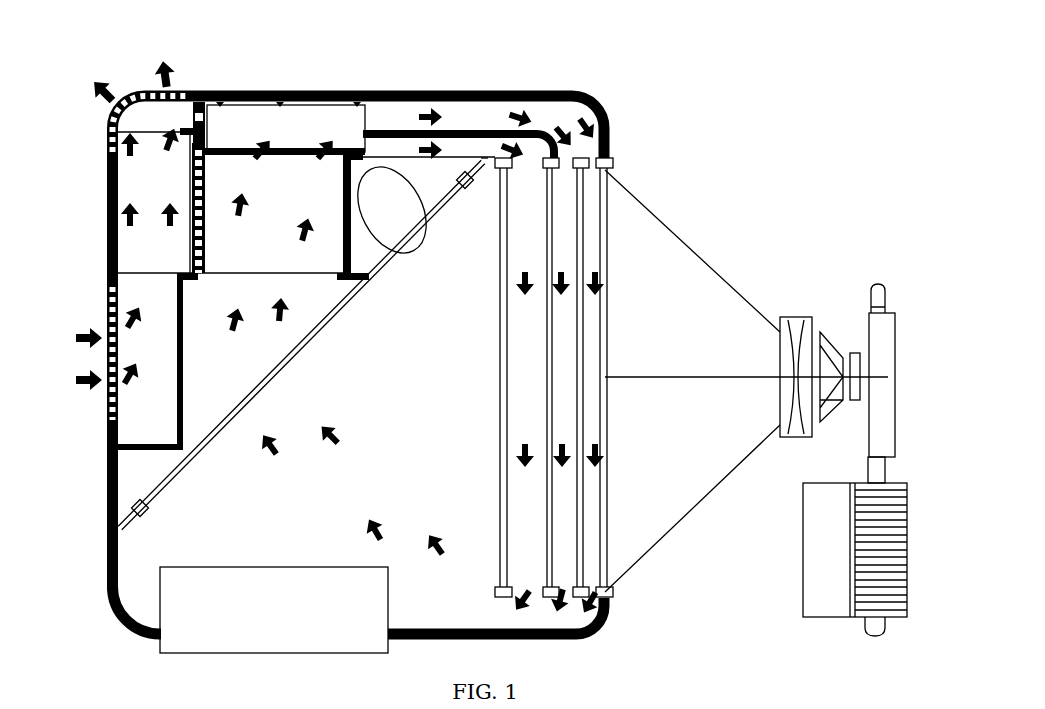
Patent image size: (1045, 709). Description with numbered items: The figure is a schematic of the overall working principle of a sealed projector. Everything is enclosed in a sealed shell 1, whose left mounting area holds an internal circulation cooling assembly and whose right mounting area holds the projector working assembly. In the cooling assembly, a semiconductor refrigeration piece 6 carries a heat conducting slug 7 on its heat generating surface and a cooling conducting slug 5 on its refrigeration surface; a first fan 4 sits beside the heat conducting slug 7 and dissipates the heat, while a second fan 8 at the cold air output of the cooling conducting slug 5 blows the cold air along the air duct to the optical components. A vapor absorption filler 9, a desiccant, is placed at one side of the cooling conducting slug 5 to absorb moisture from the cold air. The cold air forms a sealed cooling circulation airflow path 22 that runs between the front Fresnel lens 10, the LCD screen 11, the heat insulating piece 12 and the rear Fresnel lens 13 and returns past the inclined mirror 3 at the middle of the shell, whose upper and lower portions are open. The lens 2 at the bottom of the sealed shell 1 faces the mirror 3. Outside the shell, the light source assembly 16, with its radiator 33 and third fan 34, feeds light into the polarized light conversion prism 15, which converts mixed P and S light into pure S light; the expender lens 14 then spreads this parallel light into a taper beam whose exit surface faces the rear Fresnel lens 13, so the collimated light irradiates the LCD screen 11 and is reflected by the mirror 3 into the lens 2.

The sealed shell 1 is at (110, 610).
The lens 2 is at (185, 577).
The mirror 3 is at (138, 500).
The first fan 4 is at (148, 420).
The cooling conducting slug 5 is at (250, 252).
The semiconductor refrigeration piece 6 is at (193, 222).
The heat conducting slug 7 is at (138, 195).
The second fan 8 is at (227, 126).
The vapor absorption filler 9 is at (387, 210).
The front Fresnel lens 10 is at (503, 158).
The LCD screen 11 is at (548, 158).
The heat insulating piece 12 is at (580, 158).
The rear Fresnel lens 13 is at (605, 158).
The expender lens 14 is at (797, 337).
The polarized light conversion prism 15 is at (832, 357).
The light source assembly 16 is at (856, 363).
The cooling circulation airflow path 22 is at (590, 187).
The radiator 33 is at (883, 367).
The third fan 34 is at (835, 518).